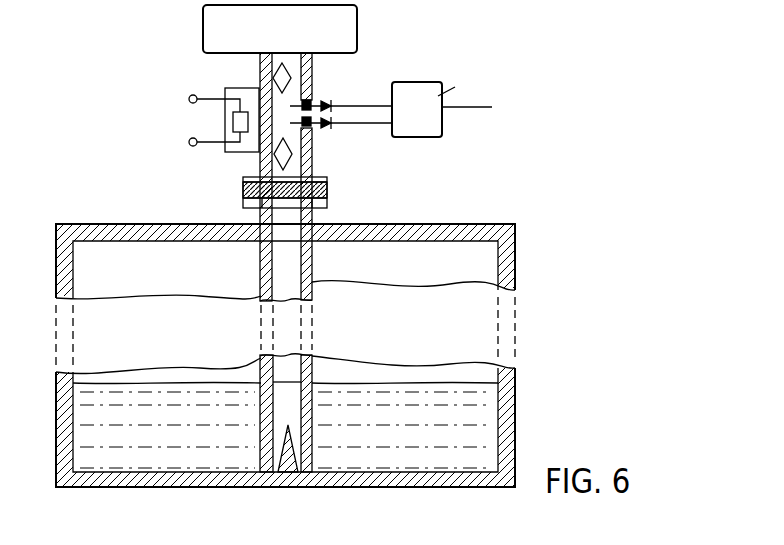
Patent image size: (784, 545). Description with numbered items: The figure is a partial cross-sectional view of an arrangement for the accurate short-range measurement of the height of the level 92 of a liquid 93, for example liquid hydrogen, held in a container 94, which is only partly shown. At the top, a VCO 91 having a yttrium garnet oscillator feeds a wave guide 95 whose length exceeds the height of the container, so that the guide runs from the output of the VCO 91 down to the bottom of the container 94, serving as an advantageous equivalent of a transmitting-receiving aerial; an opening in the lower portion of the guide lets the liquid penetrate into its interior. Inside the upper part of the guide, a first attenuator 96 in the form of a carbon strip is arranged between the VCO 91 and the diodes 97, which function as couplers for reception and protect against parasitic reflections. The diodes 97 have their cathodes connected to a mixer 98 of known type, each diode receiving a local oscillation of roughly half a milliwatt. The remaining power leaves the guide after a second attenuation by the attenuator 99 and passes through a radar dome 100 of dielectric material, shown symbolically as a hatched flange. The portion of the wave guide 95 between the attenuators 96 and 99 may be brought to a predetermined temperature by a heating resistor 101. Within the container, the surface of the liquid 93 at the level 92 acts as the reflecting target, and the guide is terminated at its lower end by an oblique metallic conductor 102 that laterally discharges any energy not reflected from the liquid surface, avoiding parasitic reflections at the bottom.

The VCO 91 is at (345, 31).
The level 92 is at (442, 380).
The liquid 93 is at (475, 412).
The container 94 is at (505, 250).
The wave guide 95 is at (259, 72).
The first attenuator 96 is at (292, 74).
The diodes 97 is at (340, 115).
The mixer 98 is at (405, 93).
The attenuator 99 is at (263, 166).
The radar dome 100 is at (327, 188).
The heating resistor 101 is at (233, 122).
The oblique metallic conductor 102 is at (292, 470).